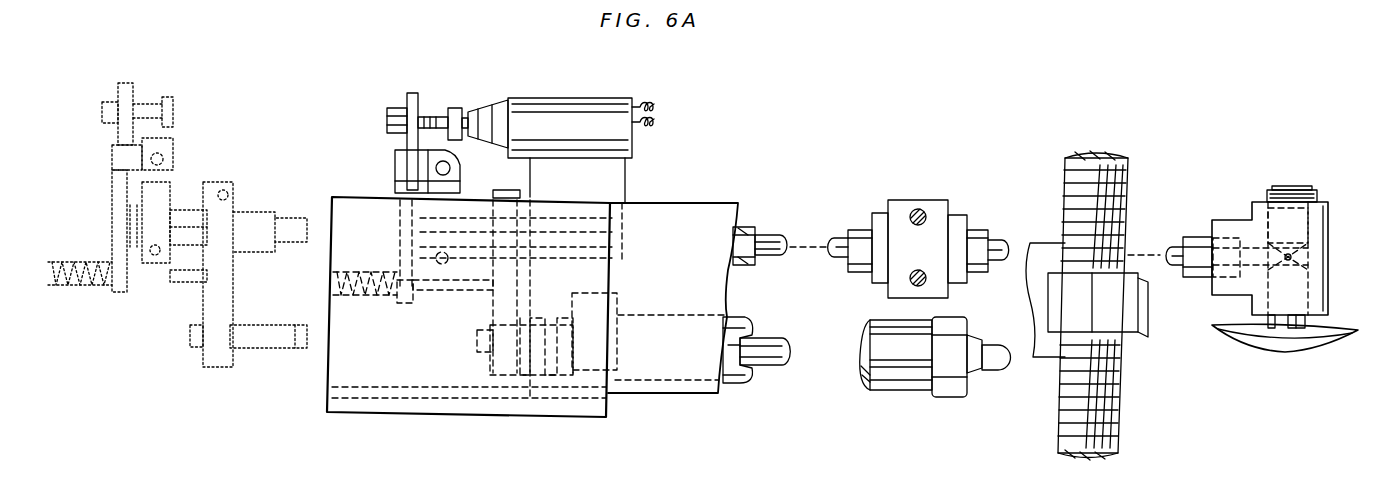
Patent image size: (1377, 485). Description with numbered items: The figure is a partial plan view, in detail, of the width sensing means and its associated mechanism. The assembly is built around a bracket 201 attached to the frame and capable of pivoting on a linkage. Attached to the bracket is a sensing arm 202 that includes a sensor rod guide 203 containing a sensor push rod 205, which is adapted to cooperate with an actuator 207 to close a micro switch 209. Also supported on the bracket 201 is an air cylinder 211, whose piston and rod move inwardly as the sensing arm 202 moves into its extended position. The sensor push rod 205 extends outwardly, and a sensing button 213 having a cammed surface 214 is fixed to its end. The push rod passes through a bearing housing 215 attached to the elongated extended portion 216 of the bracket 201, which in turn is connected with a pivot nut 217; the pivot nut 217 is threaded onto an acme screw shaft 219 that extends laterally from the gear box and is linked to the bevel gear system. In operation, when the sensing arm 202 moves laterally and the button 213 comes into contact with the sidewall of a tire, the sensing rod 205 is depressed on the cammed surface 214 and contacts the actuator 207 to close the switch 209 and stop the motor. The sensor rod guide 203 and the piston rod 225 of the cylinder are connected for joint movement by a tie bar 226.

The bracket 201 is at (363, 407).
The sensing arm 202 is at (1336, 228).
The sensor rod guide 203 is at (743, 228).
The sensor push rod 205 is at (775, 240).
The actuator 207 is at (112, 232).
The micro switch 209 is at (582, 108).
The air cylinder 211 is at (735, 380).
The sensing button 213 is at (1282, 345).
The cammed surface 214 is at (1270, 255).
The bearing housing 215 is at (935, 203).
The elongated extended portion 216 is at (680, 207).
The pivot nut 217 is at (1128, 322).
The acme screw shaft 219 is at (1068, 418).
The piston rod 225 is at (243, 350).
The tie bar 226 is at (222, 183).